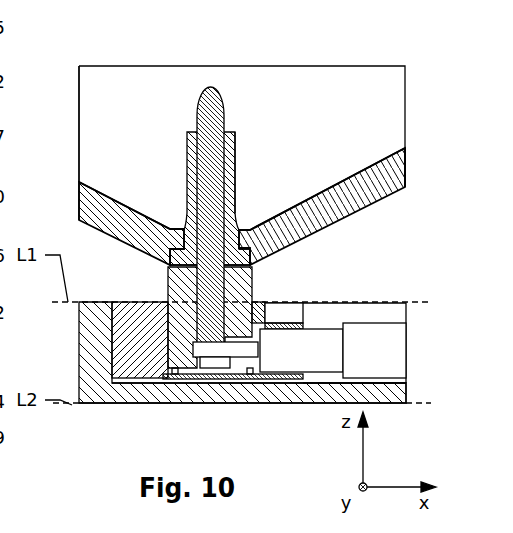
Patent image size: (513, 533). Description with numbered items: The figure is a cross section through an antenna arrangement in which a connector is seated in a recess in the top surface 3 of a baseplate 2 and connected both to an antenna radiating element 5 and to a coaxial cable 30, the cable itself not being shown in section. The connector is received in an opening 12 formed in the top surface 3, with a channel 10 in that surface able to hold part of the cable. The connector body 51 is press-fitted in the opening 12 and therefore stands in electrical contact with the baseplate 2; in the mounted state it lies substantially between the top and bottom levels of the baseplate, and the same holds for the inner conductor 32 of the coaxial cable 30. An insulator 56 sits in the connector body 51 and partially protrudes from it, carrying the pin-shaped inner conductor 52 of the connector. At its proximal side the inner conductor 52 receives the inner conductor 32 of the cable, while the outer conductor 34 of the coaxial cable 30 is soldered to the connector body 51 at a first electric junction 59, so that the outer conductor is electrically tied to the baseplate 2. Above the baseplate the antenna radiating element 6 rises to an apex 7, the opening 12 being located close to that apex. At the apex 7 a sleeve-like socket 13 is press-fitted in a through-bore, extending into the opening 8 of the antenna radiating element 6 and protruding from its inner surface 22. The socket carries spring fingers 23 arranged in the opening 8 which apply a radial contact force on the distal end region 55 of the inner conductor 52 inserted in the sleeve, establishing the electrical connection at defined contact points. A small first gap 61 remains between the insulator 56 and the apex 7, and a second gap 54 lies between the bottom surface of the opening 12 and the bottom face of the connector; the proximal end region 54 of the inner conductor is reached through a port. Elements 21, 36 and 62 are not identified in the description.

The baseplate 2 is at (216, 352).
The top surface 3 is at (139, 286).
The antenna radiating element 5 is at (342, 196).
The antenna radiating element 6 is at (242, 118).
The apex 7 is at (105, 186).
The opening 8 is at (64, 122).
The channel 10 is at (351, 330).
The opening 12 is at (358, 284).
The socket 13 is at (350, 142).
The wall end 21 is at (428, 167).
The inner surface 22 is at (385, 141).
The spring fingers 23 is at (343, 115).
The coaxial cable 30 is at (265, 414).
The inner conductor 32 is at (185, 395).
The outer conductor 34 is at (375, 385).
The block 36 is at (397, 346).
The connector body 51 is at (92, 340).
The inner conductor 52 is at (132, 141).
The second gap 54 is at (264, 402).
The distal end region 55 is at (257, 180).
The insulator 56 is at (93, 191).
The first electric junction 59 is at (355, 351).
The first gap 61 is at (310, 234).
The plate 62 is at (159, 411).